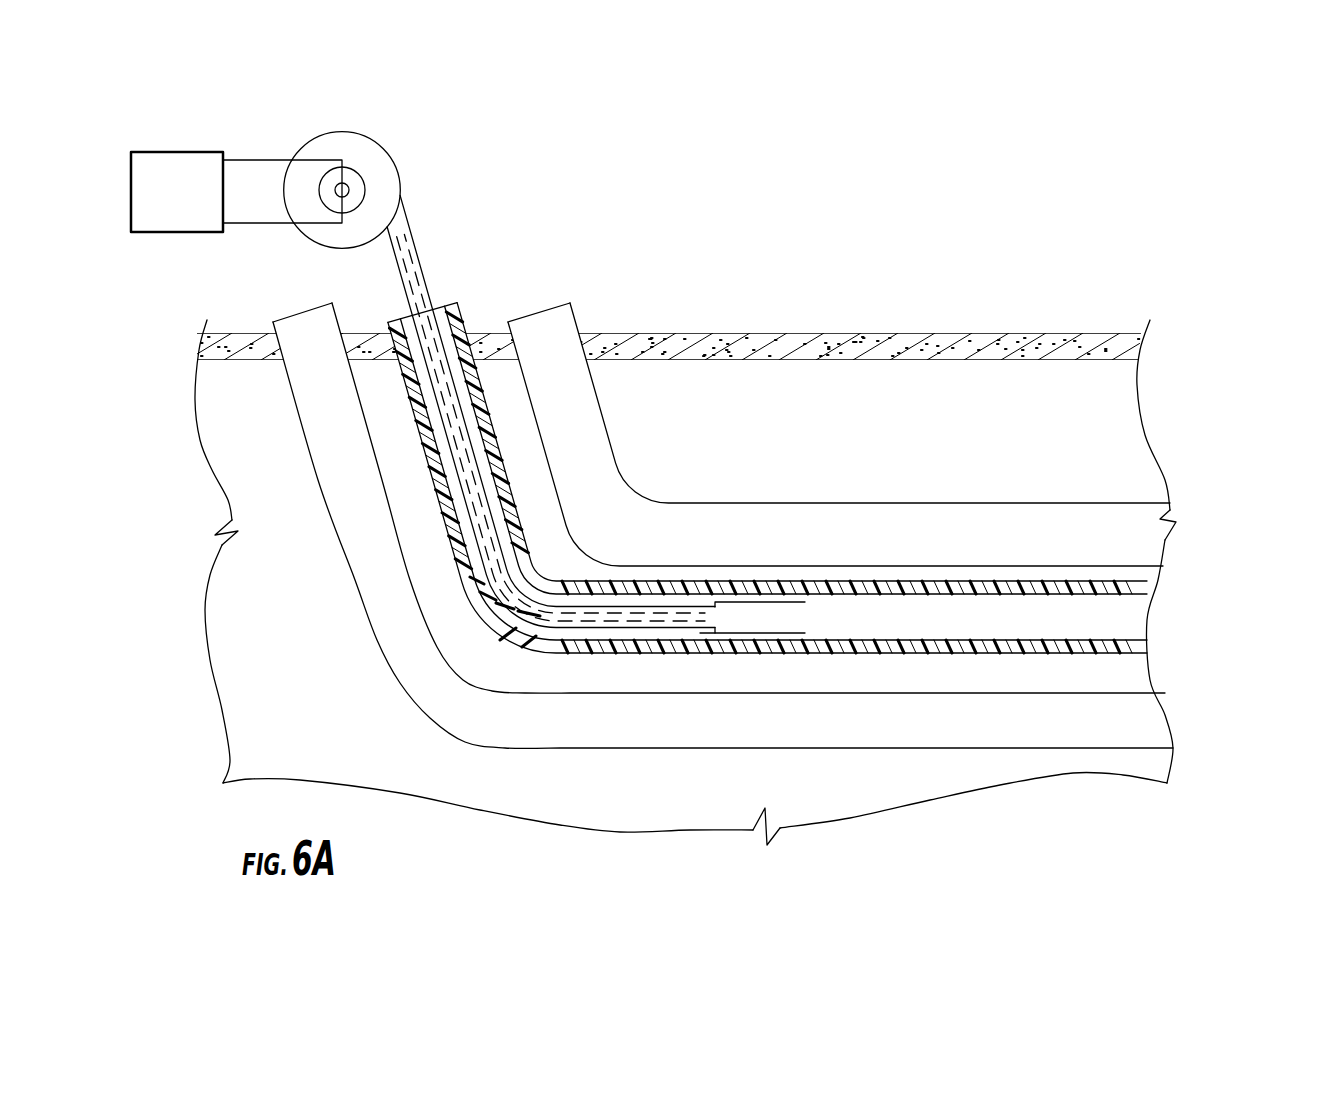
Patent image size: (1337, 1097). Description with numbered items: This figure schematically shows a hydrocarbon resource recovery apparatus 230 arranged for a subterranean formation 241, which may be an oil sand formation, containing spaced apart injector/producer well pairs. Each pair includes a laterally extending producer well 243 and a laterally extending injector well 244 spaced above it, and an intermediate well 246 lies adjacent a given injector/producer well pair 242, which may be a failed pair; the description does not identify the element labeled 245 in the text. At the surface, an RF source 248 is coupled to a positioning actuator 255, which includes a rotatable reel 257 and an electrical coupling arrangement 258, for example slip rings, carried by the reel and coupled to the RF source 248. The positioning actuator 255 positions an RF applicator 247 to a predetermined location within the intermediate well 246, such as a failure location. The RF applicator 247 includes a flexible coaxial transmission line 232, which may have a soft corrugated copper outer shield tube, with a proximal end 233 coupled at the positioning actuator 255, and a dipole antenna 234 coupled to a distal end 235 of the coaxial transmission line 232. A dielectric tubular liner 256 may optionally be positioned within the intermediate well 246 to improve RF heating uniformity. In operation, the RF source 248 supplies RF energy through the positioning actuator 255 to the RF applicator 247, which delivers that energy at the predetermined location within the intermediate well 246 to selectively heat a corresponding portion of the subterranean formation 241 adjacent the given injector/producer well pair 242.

The hydrocarbon resource recovery apparatus 230 is at (382, 85).
The coaxial transmission line 232 is at (523, 623).
The proximal end 233 is at (406, 214).
The dipole antenna 234 is at (715, 602).
The distal end 235 is at (702, 632).
The subterranean formation 241 is at (812, 383).
The given injector/producer well pair 242 is at (1178, 553).
The producer well 243 is at (317, 483).
The injector well 244 is at (543, 323).
The vertical wellbore section 245 is at (1167, 519).
The intermediate well 246 is at (440, 305).
The RF applicator 247 is at (767, 414).
The RF source 248 is at (167, 152).
The positioning actuator 255 is at (308, 117).
The dielectric tubular liner 256 is at (390, 320).
The rotatable reel 257 is at (358, 148).
The electrical coupling arrangement 258 is at (349, 190).